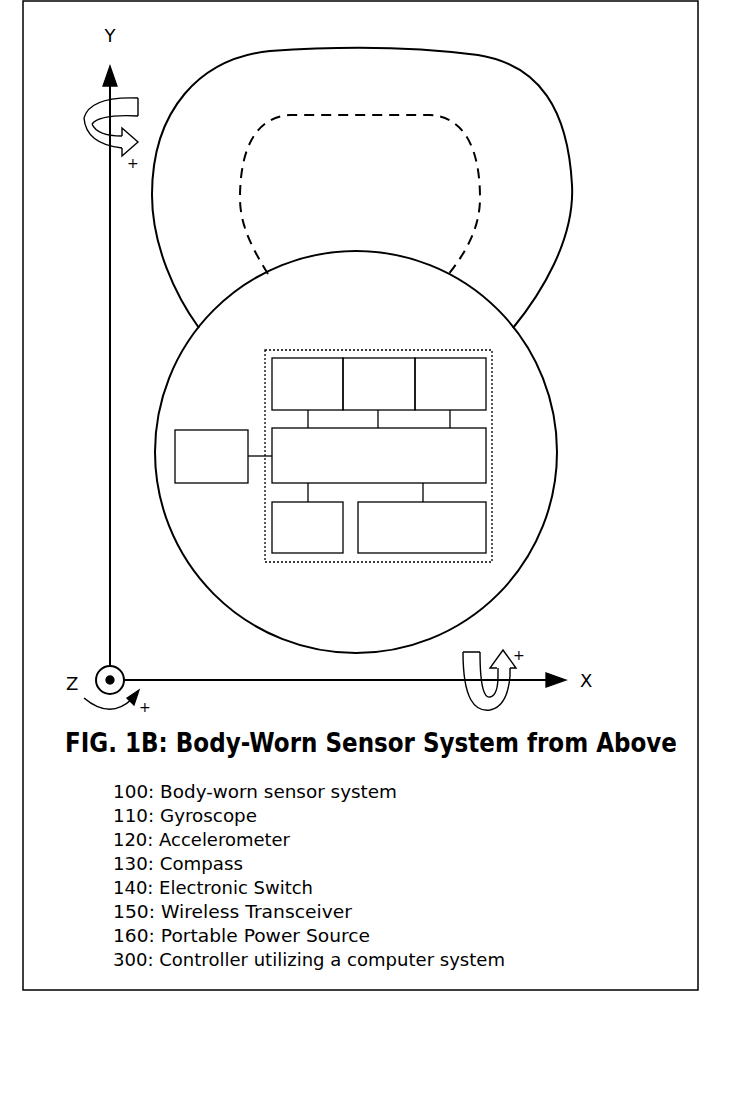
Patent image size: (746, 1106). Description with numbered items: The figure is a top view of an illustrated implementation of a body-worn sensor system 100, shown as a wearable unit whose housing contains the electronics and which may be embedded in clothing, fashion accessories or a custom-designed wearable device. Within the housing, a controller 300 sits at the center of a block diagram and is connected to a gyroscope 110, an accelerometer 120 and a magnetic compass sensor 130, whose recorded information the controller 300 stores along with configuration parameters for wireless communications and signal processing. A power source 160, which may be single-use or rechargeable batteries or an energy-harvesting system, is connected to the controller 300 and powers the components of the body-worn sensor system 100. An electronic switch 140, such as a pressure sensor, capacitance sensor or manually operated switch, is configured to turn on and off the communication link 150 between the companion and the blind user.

The body-worn sensor system 100 is at (577, 448).
The gyroscope 110 is at (307, 384).
The accelerometer 120 is at (379, 384).
The magnetic compass sensor 130 is at (450, 384).
The electronic switch 140 is at (307, 527).
The communication link 150 is at (422, 527).
The power source 160 is at (211, 456).
The controller 300 is at (367, 456).